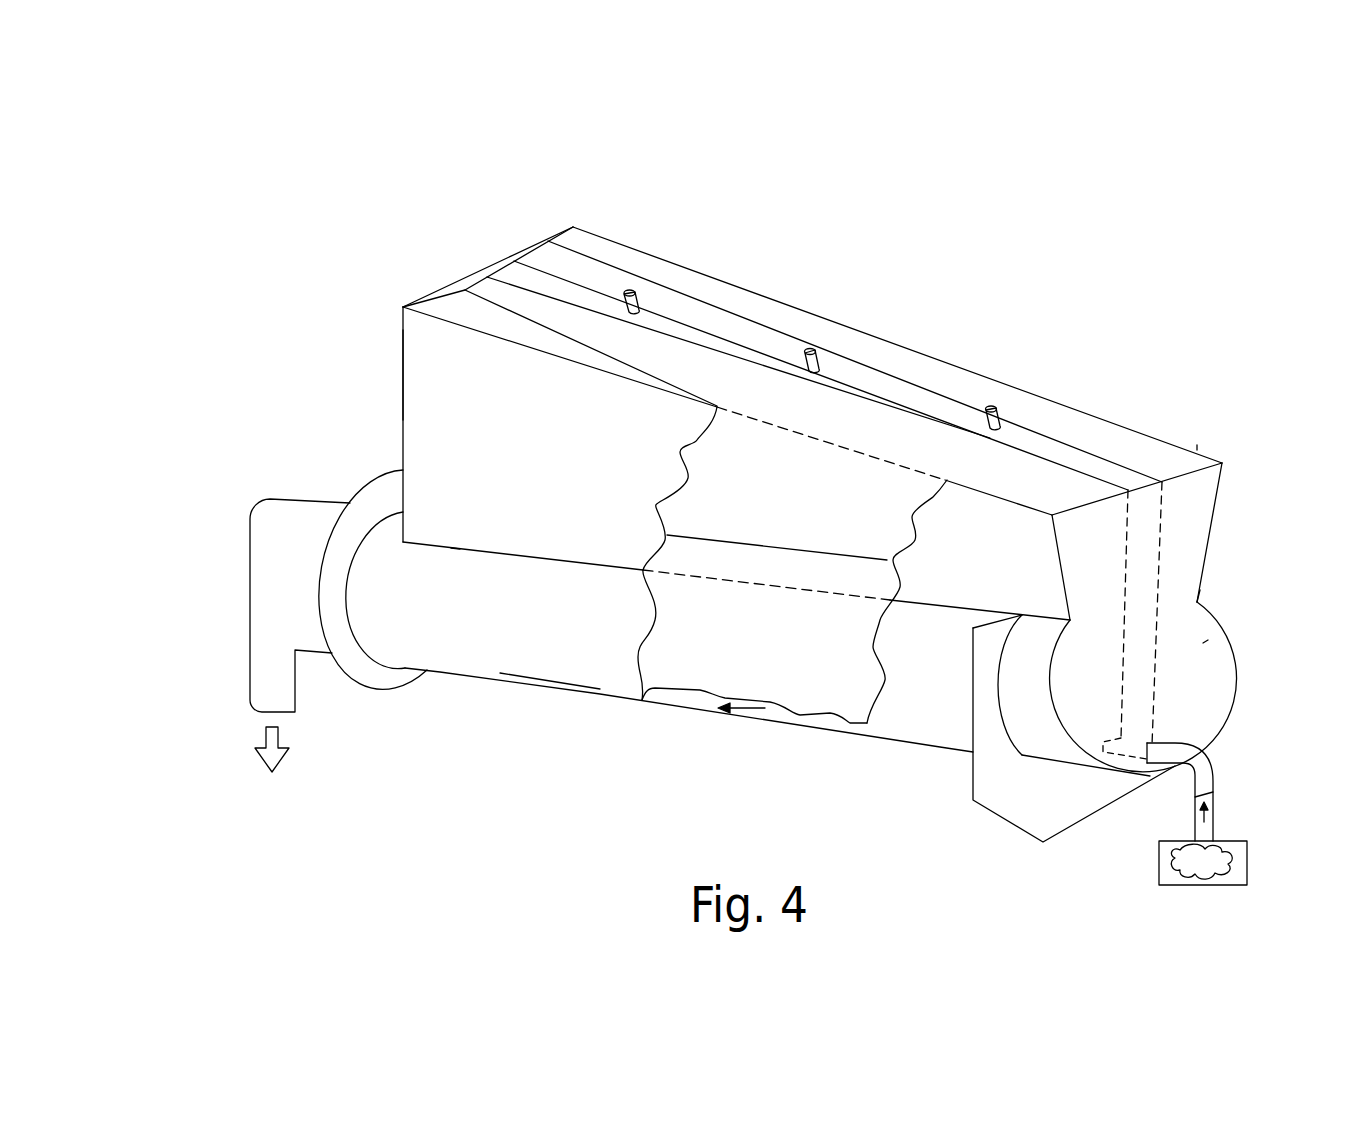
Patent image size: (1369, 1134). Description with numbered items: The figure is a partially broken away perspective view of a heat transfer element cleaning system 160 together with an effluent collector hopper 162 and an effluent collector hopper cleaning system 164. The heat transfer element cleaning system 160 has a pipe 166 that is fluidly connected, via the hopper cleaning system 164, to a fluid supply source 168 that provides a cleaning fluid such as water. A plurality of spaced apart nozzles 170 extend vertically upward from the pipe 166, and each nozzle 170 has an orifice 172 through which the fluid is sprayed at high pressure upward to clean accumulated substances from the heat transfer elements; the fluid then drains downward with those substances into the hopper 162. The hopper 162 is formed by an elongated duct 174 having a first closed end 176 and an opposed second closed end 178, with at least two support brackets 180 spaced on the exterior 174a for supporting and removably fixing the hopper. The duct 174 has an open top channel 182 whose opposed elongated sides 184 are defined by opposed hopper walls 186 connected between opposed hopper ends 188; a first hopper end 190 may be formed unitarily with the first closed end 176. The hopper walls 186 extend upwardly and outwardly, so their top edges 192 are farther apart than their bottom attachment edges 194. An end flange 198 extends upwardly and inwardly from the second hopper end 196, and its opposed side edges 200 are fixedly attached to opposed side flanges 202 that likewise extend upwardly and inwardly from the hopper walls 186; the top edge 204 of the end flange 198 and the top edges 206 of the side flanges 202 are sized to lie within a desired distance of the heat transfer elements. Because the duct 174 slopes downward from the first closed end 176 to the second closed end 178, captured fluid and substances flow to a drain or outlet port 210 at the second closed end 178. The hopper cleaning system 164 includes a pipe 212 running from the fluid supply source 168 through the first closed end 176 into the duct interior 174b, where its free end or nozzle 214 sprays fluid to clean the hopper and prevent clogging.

The heat transfer element cleaning system 160 is at (1097, 455).
The effluent collector hopper 162 is at (1215, 535).
The effluent collector hopper cleaning system 164 is at (1218, 770).
The pipe 166 is at (778, 309).
The fluid supply source 168 is at (1242, 862).
The nozzles 170 is at (640, 303).
The orifice 172 is at (634, 292).
The elongated duct 174 is at (1233, 677).
The exterior of elongated duct 174a is at (550, 662).
The elongated duct interior 174b is at (727, 665).
The first closed end 176 is at (1203, 643).
The second closed end 178 is at (250, 572).
The support brackets 180 is at (387, 673).
The open top channel 182 is at (697, 560).
The opposed elongated sides 184 is at (777, 543).
The opposed hopper walls 186 is at (430, 370).
The opposed hopper ends 188 is at (482, 288).
The first hopper end 190 is at (1180, 587).
The top edges 192 is at (1197, 443).
The bottom attachment edges 194 is at (848, 553).
The second hopper end 196 is at (403, 378).
The end flange 198 is at (477, 283).
The opposed side edges 200 is at (572, 225).
The opposed side flanges 202 is at (613, 240).
The top edge 204 is at (523, 277).
The top edges 206 is at (727, 287).
The drain or outlet port 210 is at (258, 712).
The pipe 212 is at (1177, 745).
The free end or nozzle 214 is at (1212, 793).